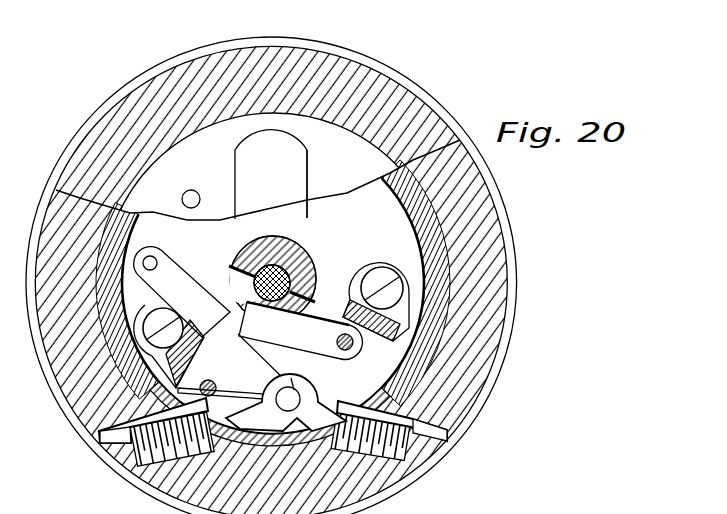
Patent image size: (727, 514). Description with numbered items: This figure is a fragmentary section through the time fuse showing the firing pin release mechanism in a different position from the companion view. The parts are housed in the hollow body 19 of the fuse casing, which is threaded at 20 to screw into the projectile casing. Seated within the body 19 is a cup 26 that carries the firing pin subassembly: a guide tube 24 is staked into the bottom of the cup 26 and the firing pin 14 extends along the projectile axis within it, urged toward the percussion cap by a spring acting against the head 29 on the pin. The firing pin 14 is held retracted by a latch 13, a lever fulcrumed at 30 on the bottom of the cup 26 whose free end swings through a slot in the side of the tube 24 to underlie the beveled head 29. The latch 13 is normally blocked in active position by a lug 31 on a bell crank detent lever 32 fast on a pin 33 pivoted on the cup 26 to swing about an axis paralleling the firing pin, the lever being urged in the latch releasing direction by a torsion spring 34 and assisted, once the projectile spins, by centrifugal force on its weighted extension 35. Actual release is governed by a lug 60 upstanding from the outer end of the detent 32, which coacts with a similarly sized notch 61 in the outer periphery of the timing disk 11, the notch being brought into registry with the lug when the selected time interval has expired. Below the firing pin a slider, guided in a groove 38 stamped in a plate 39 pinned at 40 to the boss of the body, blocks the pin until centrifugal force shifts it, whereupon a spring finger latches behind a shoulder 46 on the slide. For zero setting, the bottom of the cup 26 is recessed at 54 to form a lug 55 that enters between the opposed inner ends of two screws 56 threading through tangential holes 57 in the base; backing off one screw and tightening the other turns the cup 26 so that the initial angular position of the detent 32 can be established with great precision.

The timing disk 11 is at (346, 403).
The latch 13 is at (313, 322).
The firing pin 14 is at (305, 249).
The body 19 is at (132, 100).
The threads 20 is at (100, 114).
The guide tube 24 is at (303, 258).
The cup 26 is at (437, 303).
The head 29 is at (300, 274).
The fulcrum 30 is at (355, 347).
The lug 31 is at (229, 310).
The detent lever 32 is at (252, 353).
The pin 33 is at (208, 381).
The torsion spring 34 is at (226, 388).
The weighted extension 35 is at (168, 265).
The groove 38 is at (235, 178).
The plate 39 is at (164, 163).
The pin 40 is at (190, 190).
The shoulder 46 is at (307, 146).
The recess 54 is at (140, 420).
The lug 55 is at (268, 460).
The screws 56 is at (134, 465).
The holes 57 is at (104, 446).
The lug 60 is at (314, 399).
The notch 61 is at (301, 392).